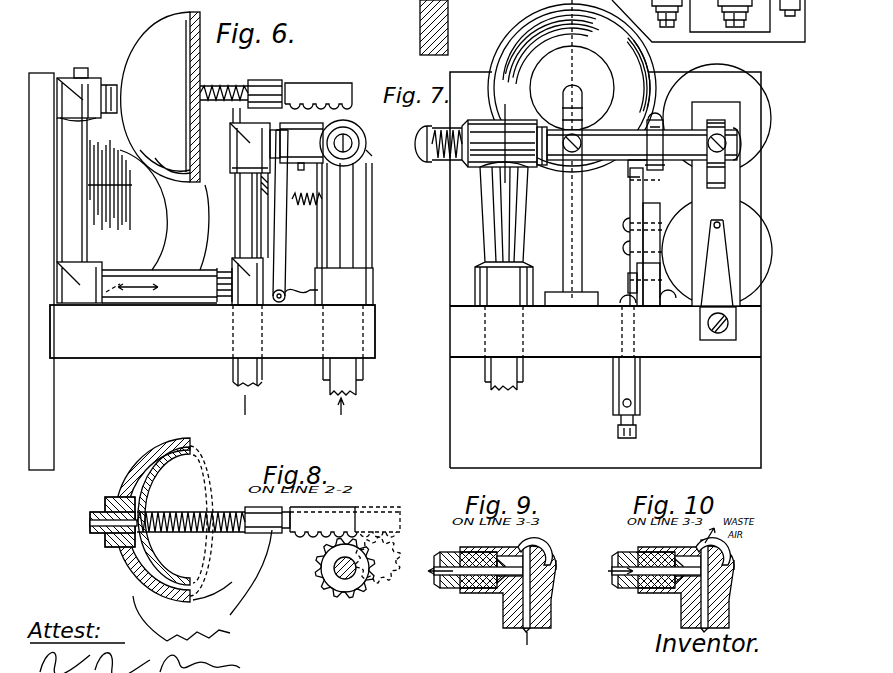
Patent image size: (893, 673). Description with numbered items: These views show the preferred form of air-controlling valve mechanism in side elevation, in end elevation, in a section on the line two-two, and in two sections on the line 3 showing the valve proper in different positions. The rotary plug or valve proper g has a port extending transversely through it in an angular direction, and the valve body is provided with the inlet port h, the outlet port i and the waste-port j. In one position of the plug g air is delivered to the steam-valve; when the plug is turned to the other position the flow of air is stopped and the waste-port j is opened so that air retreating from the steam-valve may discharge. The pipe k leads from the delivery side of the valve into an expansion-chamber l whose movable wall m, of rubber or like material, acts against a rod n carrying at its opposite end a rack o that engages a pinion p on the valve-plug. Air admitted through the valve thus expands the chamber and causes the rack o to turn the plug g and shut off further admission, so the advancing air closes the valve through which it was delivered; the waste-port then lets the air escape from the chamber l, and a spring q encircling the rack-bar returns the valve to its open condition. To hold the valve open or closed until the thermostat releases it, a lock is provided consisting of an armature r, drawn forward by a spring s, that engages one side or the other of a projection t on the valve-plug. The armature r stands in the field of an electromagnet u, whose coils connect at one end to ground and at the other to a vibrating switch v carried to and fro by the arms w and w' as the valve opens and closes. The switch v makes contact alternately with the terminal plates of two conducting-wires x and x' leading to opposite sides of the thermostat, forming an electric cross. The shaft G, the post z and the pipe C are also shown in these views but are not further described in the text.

In FIG. 6, the pipe k is at (163, 186).
In FIG. 8, the pipe k is at (92, 521).
In FIG. 9, the pipe k is at (450, 589).
In FIG. 10, the pipe k is at (624, 590).
In FIG. 6, the expansion-chamber l is at (155, 97).
In FIG. 7, the expansion-chamber l is at (570, 88).
In FIG. 8, the expansion-chamber l is at (127, 480).
In FIG. 6, the movable wall m is at (200, 118).
In FIG. 7, the movable wall m is at (576, 64).
In FIG. 8, the movable wall m is at (192, 521).
In FIG. 6, the electromagnet u is at (205, 196).
In FIG. 7, the electromagnet u is at (717, 184).
In FIG. 6, the rod n is at (222, 85).
In FIG. 8, the rod n is at (177, 512).
In FIG. 6, the spring q is at (250, 105).
In FIG. 8, the spring q is at (255, 531).
In FIG. 6, the rack o is at (318, 96).
In FIG. 7, the rack o is at (564, 92).
In FIG. 8, the rack o is at (304, 540).
In FIG. 6, the pinion p is at (352, 126).
In FIG. 7, the pinion p is at (583, 116).
In FIG. 8, the pinion p is at (324, 575).
In FIG. 6, the shaft G is at (374, 160).
In FIG. 7, the shaft G is at (578, 130).
In FIG. 6, the inlet port h is at (344, 234).
In FIG. 7, the inlet port h is at (504, 234).
In FIG. 9, the inlet port h is at (508, 591).
In FIG. 10, the inlet port h is at (686, 587).
In FIG. 6, the armature r is at (295, 216).
In FIG. 7, the armature r is at (716, 221).
In FIG. 6, the spring s is at (306, 208).
In FIG. 6, the projection t is at (300, 170).
In FIG. 7, the projection t is at (713, 180).
In FIG. 6, the air pipe C is at (326, 383).
In FIG. 7, the air pipe C is at (519, 382).
In FIG. 9, the air pipe C is at (532, 642).
In FIG. 10, the air pipe C is at (722, 620).
In FIG. 7, the rotary plug g is at (538, 167).
In FIG. 8, the rotary plug g is at (340, 578).
In FIG. 9, the rotary plug g is at (552, 564).
In FIG. 10, the rotary plug g is at (735, 570).
In FIG. 7, the post z is at (572, 170).
In FIG. 7, the arm w is at (644, 309).
In FIG. 7, the arm w' is at (636, 209).
In FIG. 7, the vibrating switch v is at (630, 208).
In FIG. 7, the conducting-wire x is at (754, 15).
In FIG. 7, the conducting-wire x' is at (678, 13).
In FIG. 7, the section line 3 is at (504, 144).
In FIG. 9, the outlet port i is at (493, 553).
In FIG. 10, the outlet port i is at (671, 553).
In FIG. 9, the waste-port j is at (527, 547).
In FIG. 10, the waste-port j is at (710, 553).